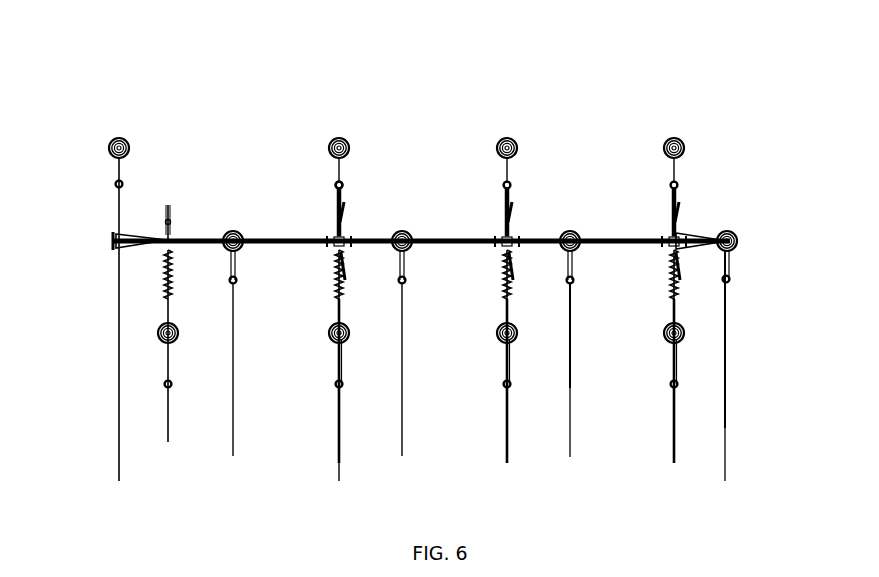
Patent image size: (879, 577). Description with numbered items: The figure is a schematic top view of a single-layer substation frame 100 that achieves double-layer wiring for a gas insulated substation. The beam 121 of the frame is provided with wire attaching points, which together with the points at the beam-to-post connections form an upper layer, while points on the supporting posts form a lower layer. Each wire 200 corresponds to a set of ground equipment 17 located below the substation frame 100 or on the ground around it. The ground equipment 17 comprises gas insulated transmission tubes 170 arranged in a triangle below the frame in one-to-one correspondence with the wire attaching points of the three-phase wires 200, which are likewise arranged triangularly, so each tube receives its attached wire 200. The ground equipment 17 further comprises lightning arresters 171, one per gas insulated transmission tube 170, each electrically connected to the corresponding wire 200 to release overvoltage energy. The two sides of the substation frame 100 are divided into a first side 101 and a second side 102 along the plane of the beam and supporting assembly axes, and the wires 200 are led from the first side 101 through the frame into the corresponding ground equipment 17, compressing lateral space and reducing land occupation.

The substation frame 100 is at (202, 90).
The first side 101 is at (452, 465).
The second side 102 is at (616, 152).
The beam 121 is at (293, 237).
The ground equipment 17 is at (396, 62).
The gas insulated transmission tube 170 is at (344, 185).
The lightning arrester 171 is at (346, 140).
The wire 200 is at (232, 400).